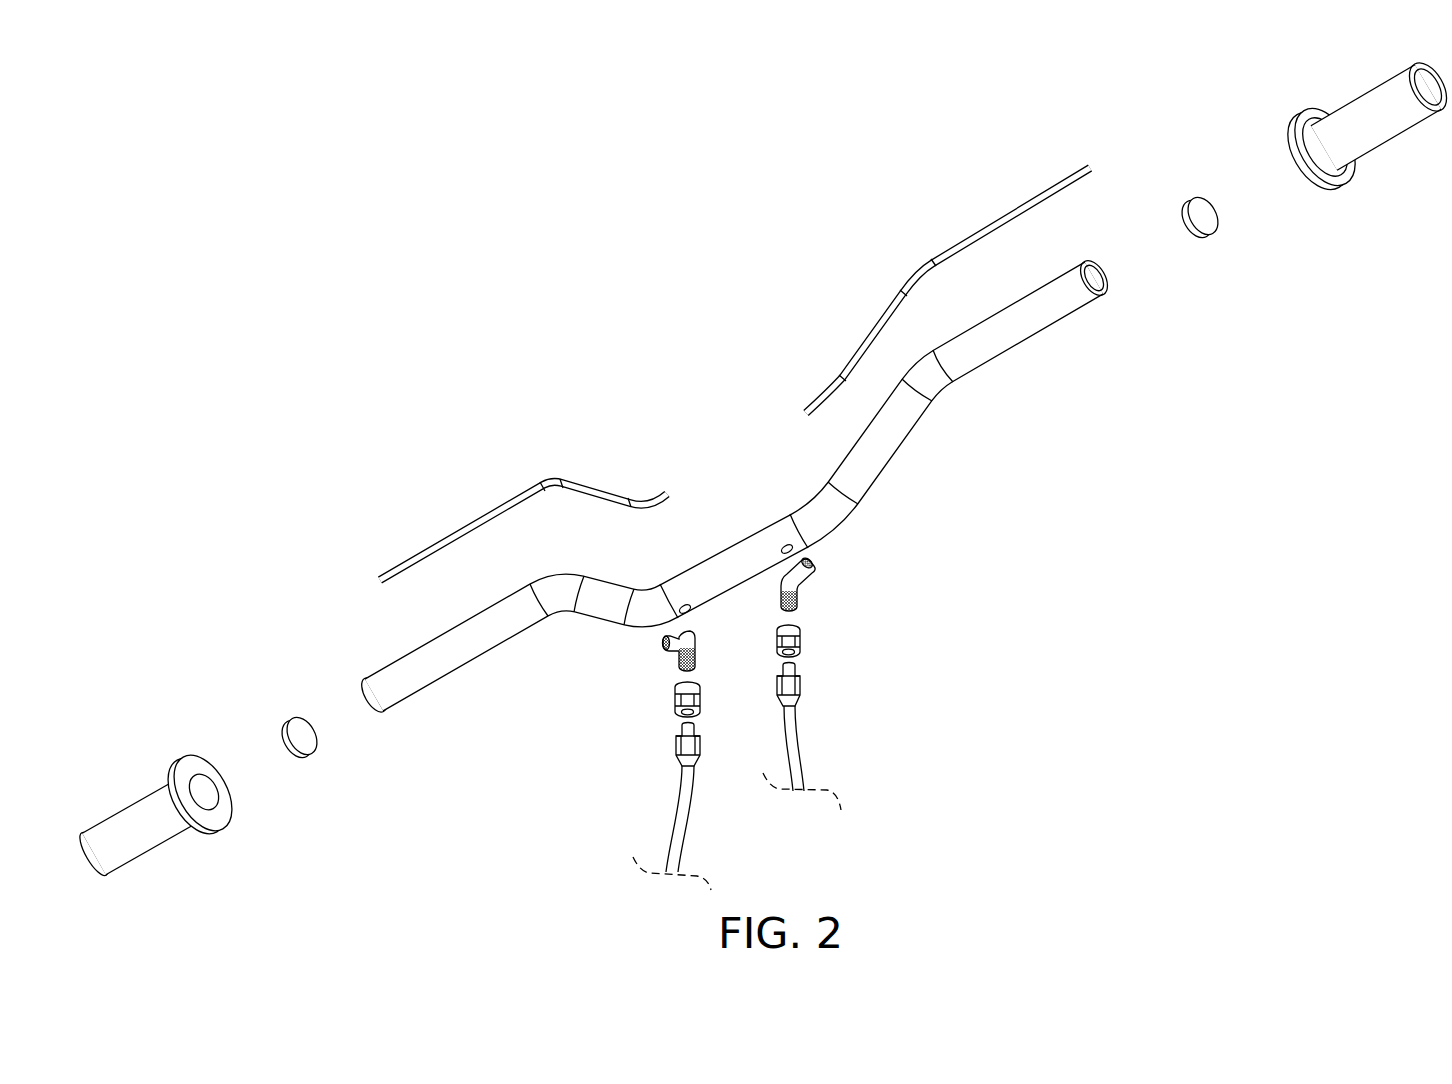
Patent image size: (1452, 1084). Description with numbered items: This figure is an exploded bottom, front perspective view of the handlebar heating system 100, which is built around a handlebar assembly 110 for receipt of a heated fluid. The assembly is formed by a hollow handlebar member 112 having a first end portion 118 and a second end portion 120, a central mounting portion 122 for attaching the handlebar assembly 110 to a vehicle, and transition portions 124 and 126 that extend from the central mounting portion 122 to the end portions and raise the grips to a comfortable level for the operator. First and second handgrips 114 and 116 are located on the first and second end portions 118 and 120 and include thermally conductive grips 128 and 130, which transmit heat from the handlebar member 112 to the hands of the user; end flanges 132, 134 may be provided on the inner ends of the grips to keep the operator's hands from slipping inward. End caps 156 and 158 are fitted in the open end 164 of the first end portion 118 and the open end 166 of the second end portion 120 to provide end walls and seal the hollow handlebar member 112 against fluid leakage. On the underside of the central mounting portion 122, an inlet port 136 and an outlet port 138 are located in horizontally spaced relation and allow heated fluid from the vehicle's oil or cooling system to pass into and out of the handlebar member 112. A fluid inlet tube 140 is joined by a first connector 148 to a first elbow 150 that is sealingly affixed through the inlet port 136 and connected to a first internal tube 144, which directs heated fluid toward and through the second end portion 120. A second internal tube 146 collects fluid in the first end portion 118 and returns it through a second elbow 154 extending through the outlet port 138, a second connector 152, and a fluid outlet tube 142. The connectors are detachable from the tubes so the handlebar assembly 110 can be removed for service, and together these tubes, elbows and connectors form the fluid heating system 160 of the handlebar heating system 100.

The handlebar heating system 100 is at (421, 376).
The handlebar assembly 110 is at (555, 775).
The hollow handlebar member 112 is at (440, 614).
The first handgrip 114 is at (186, 693).
The second handgrip 116 is at (1231, 146).
The first end portion 118 is at (482, 652).
The second end portion 120 is at (1042, 315).
The central mounting portion 122 is at (731, 552).
The first transition portion 124 is at (583, 612).
The second transition portion 126 is at (884, 437).
The thermally conductive grip 128 is at (150, 848).
The thermally conductive grip 130 is at (1364, 138).
The end flange 132 is at (226, 810).
The end flange 134 is at (1308, 110).
The inlet port 136 is at (785, 544).
The outlet port 138 is at (683, 607).
The fluid inlet tube 140 is at (791, 742).
The fluid outlet tube 142 is at (672, 818).
The first internal tube 144 is at (912, 282).
The second internal tube 146 is at (548, 487).
The first connector 148 is at (801, 642).
The first elbow 150 is at (797, 580).
The second connector 152 is at (676, 705).
The second elbow 154 is at (681, 652).
The end cap 156 is at (286, 725).
The end cap 158 is at (1200, 214).
The fluid heating system 160 is at (922, 597).
The open end 164 is at (375, 712).
The open end 166 is at (1102, 272).